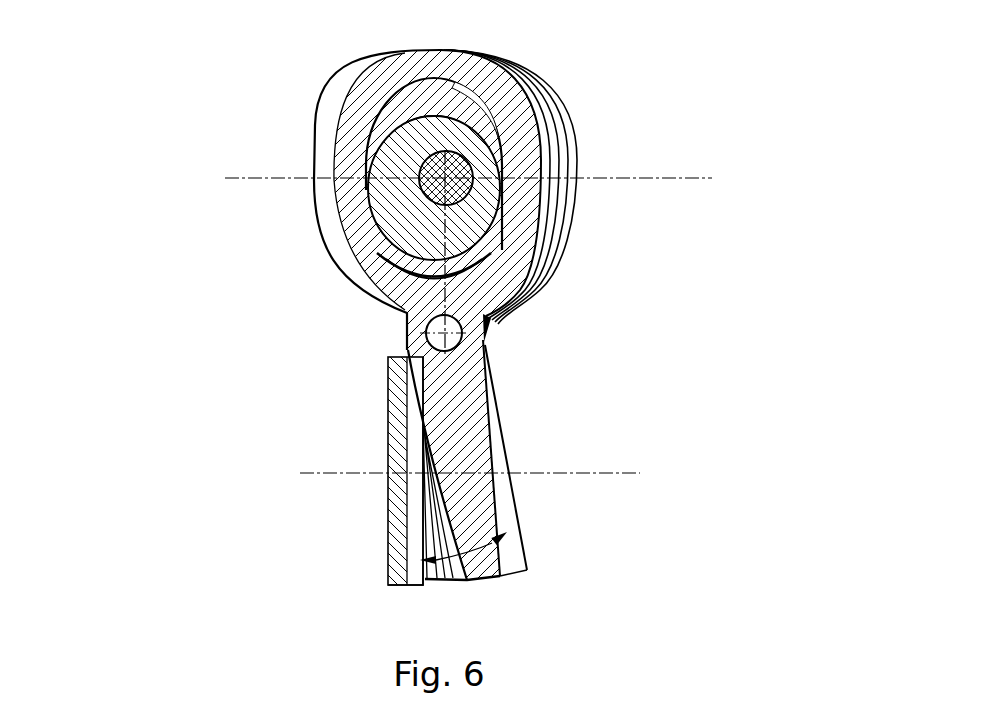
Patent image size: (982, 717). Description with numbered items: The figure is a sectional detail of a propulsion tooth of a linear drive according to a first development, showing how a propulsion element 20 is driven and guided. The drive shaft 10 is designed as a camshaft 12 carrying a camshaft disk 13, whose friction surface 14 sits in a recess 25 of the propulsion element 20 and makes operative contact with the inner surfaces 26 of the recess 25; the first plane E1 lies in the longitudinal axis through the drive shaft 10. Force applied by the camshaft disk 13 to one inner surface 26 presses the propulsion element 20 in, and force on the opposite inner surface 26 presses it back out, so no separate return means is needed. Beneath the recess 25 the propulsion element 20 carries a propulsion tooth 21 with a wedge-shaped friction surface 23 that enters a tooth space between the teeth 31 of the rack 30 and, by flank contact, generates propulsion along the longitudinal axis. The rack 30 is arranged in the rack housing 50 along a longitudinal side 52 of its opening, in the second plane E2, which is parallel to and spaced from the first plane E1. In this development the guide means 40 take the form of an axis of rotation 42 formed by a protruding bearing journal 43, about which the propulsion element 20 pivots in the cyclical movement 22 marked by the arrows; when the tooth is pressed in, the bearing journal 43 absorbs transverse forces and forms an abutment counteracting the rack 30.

The drive shaft 10 is at (386, 194).
The camshaft 12 is at (337, 179).
The camshaft disk 13 is at (392, 200).
The friction surface 14 is at (433, 105).
The propulsion element 20 is at (373, 318).
The propulsion tooth 21 is at (450, 493).
The movement 22 is at (462, 558).
The friction surface 23 is at (425, 447).
The recess 25 is at (487, 120).
The inner surfaces 26 is at (467, 97).
The rack 30 is at (325, 485).
The teeth 31 is at (417, 550).
The guide means 40 is at (568, 333).
The axis of rotation 42 is at (568, 333).
The bearing journal 43 is at (452, 340).
The rack housing 50 is at (395, 521).
The longitudinal side 52 is at (474, 174).
The first plane E1 is at (620, 180).
The second plane E2 is at (603, 473).